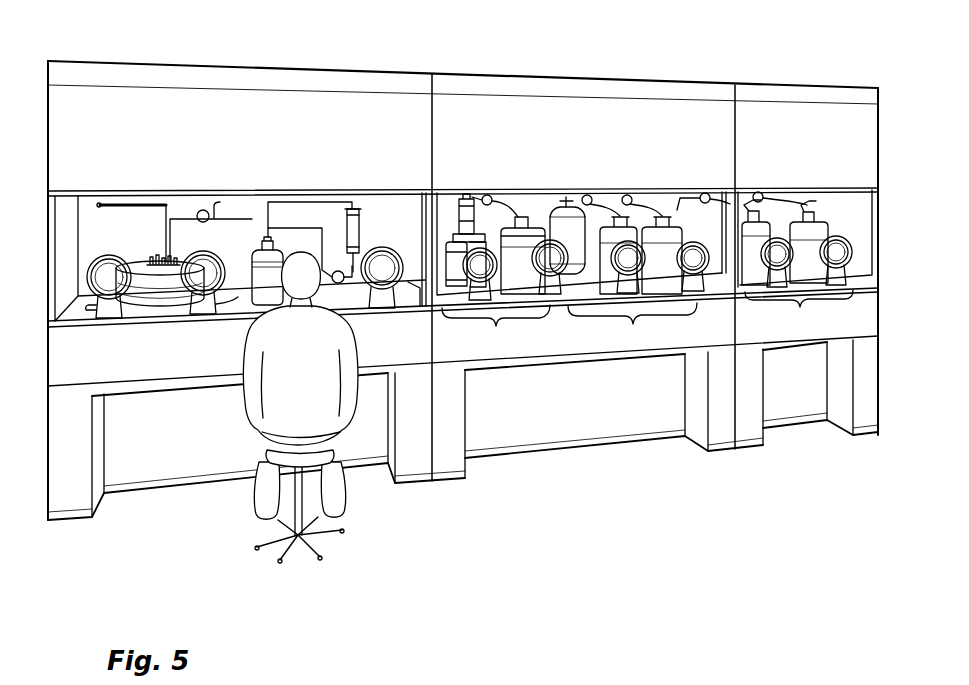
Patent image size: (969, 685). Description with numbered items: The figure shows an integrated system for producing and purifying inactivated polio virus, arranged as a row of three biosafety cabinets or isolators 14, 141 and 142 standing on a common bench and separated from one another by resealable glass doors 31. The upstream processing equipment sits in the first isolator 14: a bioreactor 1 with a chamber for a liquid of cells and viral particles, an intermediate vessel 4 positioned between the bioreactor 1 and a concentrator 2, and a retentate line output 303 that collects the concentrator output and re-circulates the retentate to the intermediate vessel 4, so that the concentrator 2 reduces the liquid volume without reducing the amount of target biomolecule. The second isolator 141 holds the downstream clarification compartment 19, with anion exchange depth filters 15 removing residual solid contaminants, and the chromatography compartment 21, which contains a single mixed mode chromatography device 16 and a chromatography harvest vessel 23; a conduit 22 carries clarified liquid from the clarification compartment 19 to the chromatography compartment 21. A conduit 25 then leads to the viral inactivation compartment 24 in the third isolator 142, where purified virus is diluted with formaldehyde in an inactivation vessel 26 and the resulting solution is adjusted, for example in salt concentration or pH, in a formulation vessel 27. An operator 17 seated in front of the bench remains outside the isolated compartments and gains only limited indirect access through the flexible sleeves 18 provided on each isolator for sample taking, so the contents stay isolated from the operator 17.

The biosafety cabinet or isolator 14 is at (281, 80).
The biosafety cabinet or isolator 141 is at (580, 88).
The biosafety cabinet or isolator 142 is at (810, 93).
The bioreactor 1 is at (153, 262).
The intermediate vessel 4 is at (264, 243).
The retentate line output 303 is at (325, 202).
The concentrator 2 is at (362, 235).
The anion exchange depth filters 15 is at (452, 240).
The conduit 22 is at (538, 227).
The mixed mode chromatography device 16 is at (575, 226).
The chromatography harvest vessel 23 is at (632, 227).
The conduit 25 is at (696, 194).
The inactivation vessel 26 is at (755, 222).
The formulation vessel 27 is at (818, 223).
The flexible sleeves 18 is at (108, 256).
The operator 17 is at (258, 344).
The resealable glass doors 31 is at (409, 283).
The clarification compartment 19 is at (496, 328).
The chromatography compartment 21 is at (632, 323).
The viral inactivation compartment 24 is at (799, 313).